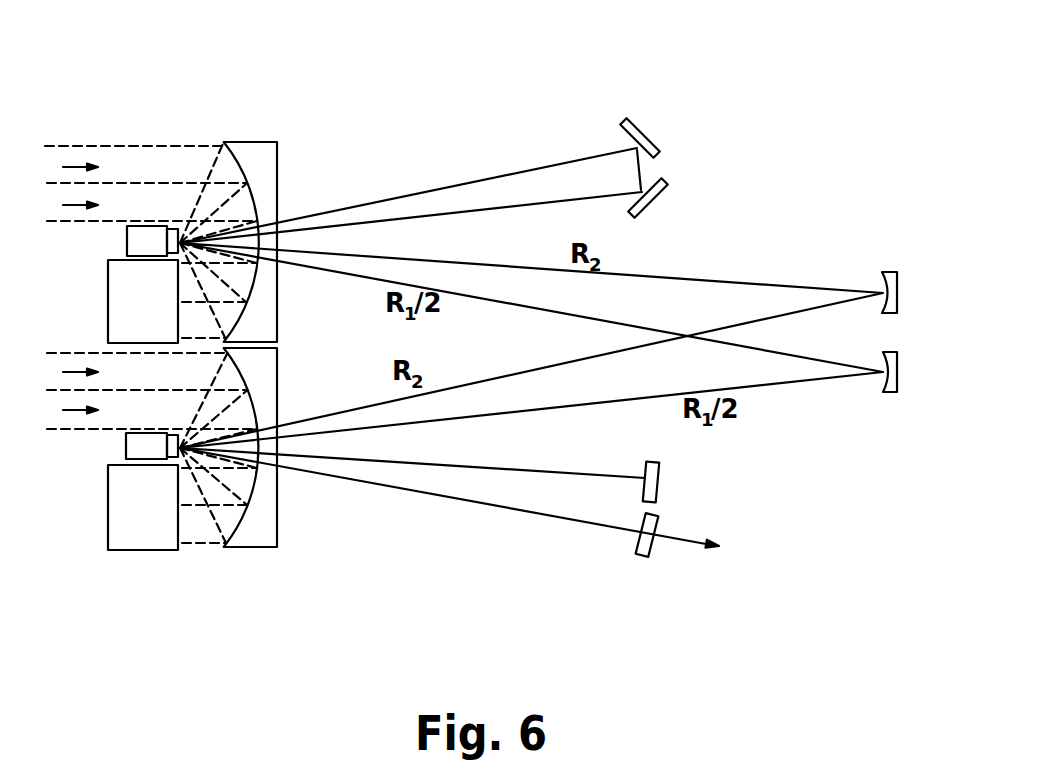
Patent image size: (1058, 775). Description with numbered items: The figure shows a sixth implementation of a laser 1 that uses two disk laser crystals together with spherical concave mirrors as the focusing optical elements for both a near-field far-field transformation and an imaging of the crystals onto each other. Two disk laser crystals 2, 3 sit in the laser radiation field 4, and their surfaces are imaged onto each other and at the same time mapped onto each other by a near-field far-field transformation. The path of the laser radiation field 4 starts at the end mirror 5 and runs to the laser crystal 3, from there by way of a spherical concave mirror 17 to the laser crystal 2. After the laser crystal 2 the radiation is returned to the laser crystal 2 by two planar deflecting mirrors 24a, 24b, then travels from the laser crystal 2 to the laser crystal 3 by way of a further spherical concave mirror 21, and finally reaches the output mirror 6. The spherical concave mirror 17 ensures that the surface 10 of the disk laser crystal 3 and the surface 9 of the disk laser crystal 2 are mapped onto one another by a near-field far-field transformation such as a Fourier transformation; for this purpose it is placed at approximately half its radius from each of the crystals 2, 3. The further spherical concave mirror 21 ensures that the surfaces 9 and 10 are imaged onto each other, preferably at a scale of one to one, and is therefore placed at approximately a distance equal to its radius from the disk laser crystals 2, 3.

The laser 1 is at (381, 129).
The disk laser crystal 2 is at (171, 226).
The disk laser crystal 3 is at (172, 466).
The laser radiation field 4 is at (428, 187).
The end mirror 5 is at (652, 488).
The output mirror 6 is at (650, 546).
The surface of the disk laser crystal 9 is at (183, 228).
The surface of the disk laser crystal 10 is at (182, 456).
The spherical concave mirror 17 is at (891, 393).
The further spherical concave mirror 21 is at (889, 272).
The planar deflecting mirror 24a is at (651, 135).
The planar deflecting mirror 24b is at (645, 203).